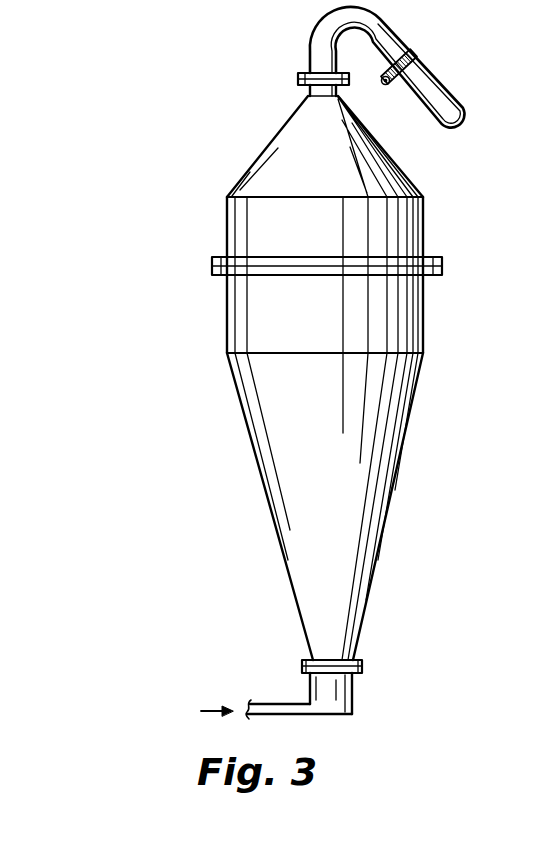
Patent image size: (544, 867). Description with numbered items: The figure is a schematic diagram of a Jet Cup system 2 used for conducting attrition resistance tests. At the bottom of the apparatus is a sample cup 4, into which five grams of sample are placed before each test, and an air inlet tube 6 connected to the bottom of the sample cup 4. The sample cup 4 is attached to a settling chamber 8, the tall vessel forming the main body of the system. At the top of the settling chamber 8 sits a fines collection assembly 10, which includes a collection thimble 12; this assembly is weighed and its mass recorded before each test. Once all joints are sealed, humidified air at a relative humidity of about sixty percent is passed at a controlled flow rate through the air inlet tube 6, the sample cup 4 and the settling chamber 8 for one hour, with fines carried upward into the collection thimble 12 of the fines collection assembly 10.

The Jet Cup system 2 is at (211, 165).
The sample cup 4 is at (343, 693).
The air inlet tube 6 is at (280, 706).
The settling chamber 8 is at (290, 458).
The fines collection assembly 10 is at (299, 77).
The collection thimble 12 is at (446, 103).